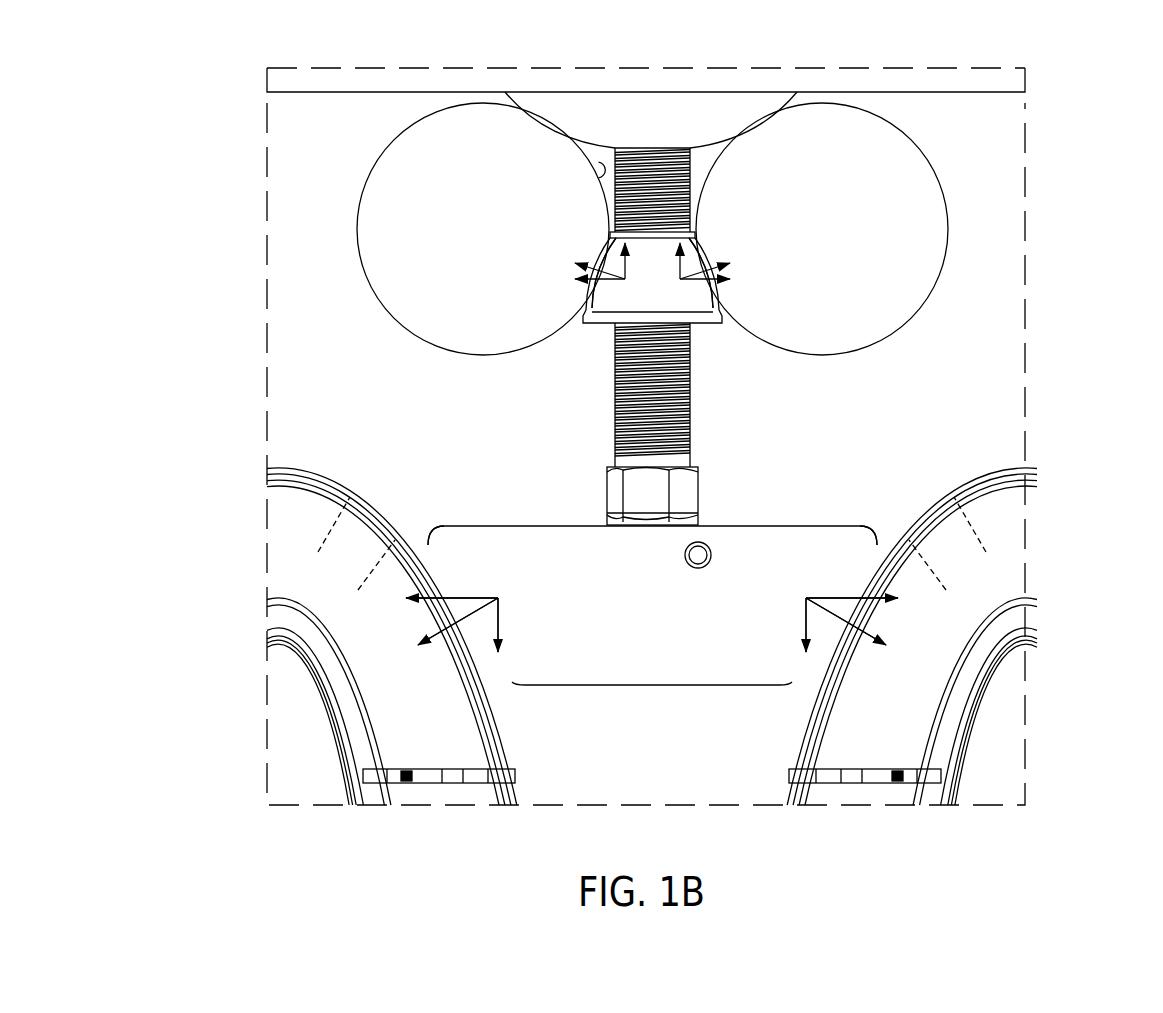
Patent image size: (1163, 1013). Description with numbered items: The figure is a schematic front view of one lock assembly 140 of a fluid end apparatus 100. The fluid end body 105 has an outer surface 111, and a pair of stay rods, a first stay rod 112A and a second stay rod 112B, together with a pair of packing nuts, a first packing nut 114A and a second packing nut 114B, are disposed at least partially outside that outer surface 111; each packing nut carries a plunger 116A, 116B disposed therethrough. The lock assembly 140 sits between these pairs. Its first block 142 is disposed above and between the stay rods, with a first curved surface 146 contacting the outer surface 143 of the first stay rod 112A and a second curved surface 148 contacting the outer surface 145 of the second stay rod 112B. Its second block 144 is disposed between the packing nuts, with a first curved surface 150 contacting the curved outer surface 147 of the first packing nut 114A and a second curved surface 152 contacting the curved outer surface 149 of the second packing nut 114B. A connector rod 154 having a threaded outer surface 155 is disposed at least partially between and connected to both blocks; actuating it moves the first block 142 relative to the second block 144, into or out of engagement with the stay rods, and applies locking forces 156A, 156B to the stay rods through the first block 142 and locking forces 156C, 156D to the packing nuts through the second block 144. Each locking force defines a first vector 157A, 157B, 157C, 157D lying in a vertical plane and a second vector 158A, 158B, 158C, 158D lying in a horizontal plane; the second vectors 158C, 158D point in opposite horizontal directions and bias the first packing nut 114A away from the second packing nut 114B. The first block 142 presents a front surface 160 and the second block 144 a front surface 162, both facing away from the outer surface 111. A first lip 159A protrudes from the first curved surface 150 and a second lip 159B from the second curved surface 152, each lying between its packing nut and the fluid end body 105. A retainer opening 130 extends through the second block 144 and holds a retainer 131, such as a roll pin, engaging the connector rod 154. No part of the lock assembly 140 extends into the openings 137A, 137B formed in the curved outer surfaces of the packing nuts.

The fluid end apparatus 100 is at (668, 40).
The fluid end body 105 is at (298, 213).
The outer surface 111 is at (300, 302).
The first stay rod 112A is at (358, 178).
The second stay rod 112B is at (950, 190).
The first packing nut 114A is at (342, 616).
The second packing nut 114B is at (955, 614).
The plunger 116A is at (290, 745).
The plunger 116B is at (1015, 742).
The retainer opening 130 is at (712, 553).
The retainer 131 is at (698, 569).
The opening 137A is at (338, 515).
The opening 137B is at (905, 530).
The lock assembly 140 is at (535, 432).
The first block 142 is at (712, 327).
The outer surface 143 is at (597, 167).
The second block 144 is at (778, 525).
The outer surface 145 is at (912, 322).
The first curved surface 146 is at (603, 287).
The outer surface 147 is at (400, 520).
The second curved surface 148 is at (705, 287).
The outer surface 149 is at (912, 636).
The first curved surface 150 is at (500, 600).
The second curved surface 152 is at (806, 605).
The connector rod 154 is at (705, 458).
The threaded outer surface 155 is at (635, 342).
The locking force 156A is at (572, 262).
The locking force 156B is at (733, 262).
The locking force 156C is at (425, 648).
The locking force 156D is at (878, 648).
The first vector 157A is at (612, 255).
The first vector 157B is at (693, 255).
The first vector 157C is at (502, 645).
The first vector 157D is at (800, 645).
The second vector 158A is at (578, 281).
The second vector 158B is at (728, 281).
The second vector 158C is at (418, 600).
The second vector 158D is at (888, 602).
The first lip 159A is at (428, 540).
The second lip 159B is at (877, 540).
The front surface 160 is at (668, 280).
The front surface 162 is at (668, 588).